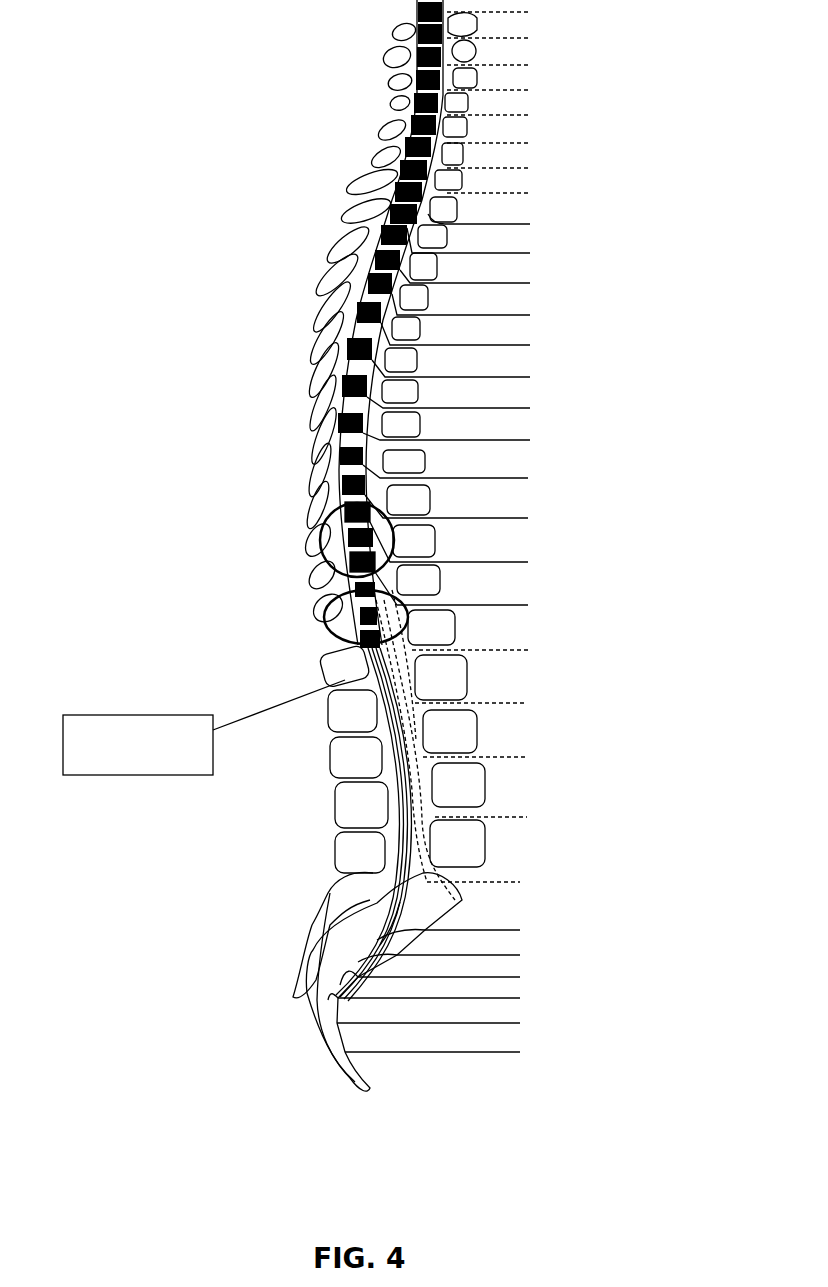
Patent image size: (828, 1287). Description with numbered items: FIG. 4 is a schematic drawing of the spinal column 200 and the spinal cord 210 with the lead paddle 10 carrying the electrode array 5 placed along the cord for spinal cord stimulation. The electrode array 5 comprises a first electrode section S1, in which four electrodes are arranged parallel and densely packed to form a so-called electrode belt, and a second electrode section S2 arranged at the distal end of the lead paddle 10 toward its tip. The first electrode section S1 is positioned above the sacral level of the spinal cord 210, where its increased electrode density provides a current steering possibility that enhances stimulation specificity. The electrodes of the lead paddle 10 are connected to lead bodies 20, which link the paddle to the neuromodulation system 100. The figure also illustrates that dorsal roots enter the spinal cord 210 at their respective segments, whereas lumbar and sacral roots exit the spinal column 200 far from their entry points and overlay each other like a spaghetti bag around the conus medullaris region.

The spinal column 200 is at (575, 432).
The spinal cord 210 is at (398, 803).
The second electrode section S2 is at (330, 503).
The first electrode section S1 is at (323, 618).
The lead paddle 10 is at (303, 550).
The electrode array 5 is at (330, 575).
The neuromodulation system 100 is at (138, 745).
The lead bodies 20 is at (275, 718).